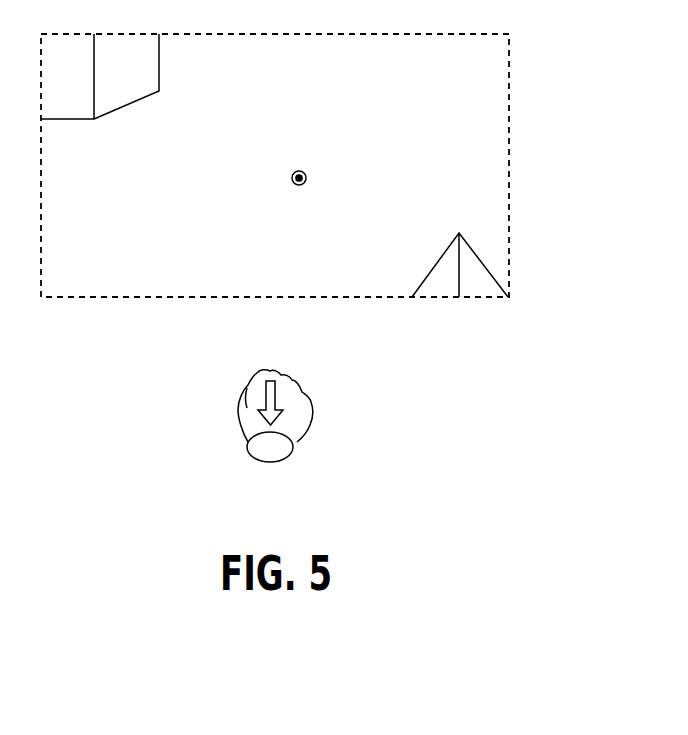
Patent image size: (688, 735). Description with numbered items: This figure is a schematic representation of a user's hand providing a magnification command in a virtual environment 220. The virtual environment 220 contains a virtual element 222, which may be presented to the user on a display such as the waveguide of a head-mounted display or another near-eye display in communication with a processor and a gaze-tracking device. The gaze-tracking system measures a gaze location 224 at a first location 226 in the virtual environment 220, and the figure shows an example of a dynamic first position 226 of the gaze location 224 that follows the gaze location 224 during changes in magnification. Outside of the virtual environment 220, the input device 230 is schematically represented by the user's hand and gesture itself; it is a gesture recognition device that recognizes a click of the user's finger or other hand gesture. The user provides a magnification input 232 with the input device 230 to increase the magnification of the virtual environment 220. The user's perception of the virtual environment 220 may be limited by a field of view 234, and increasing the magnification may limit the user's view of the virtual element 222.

The virtual environment 220 is at (98, 285).
The virtual element 222 is at (143, 67).
The gaze location 224 is at (298, 185).
The first location 226 is at (305, 174).
The input device 230 is at (305, 438).
The magnification input 232 is at (300, 392).
The field of view 234 is at (509, 68).